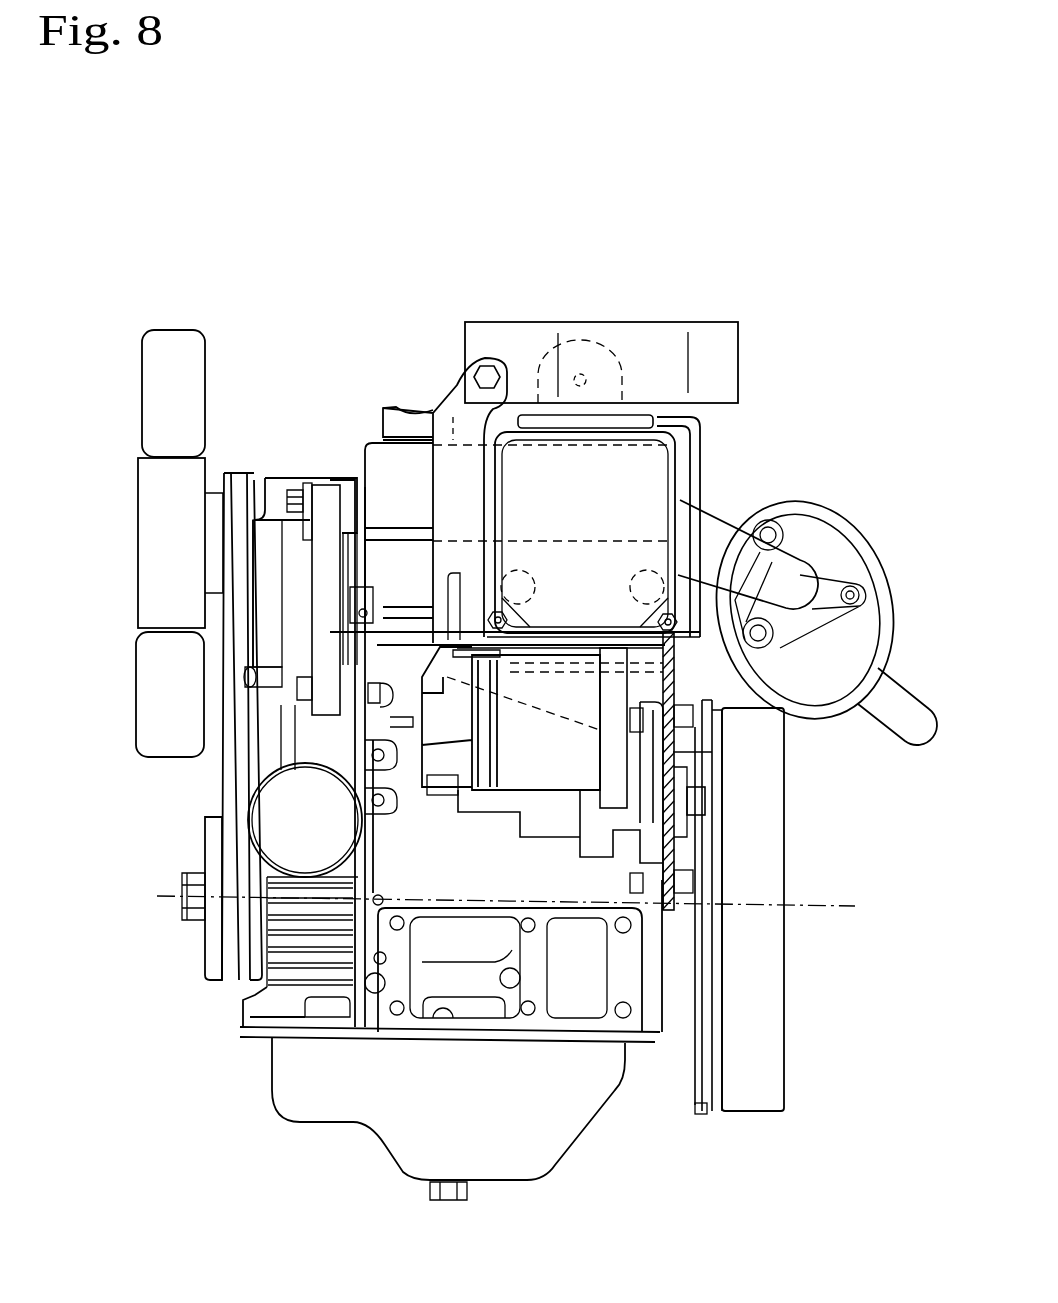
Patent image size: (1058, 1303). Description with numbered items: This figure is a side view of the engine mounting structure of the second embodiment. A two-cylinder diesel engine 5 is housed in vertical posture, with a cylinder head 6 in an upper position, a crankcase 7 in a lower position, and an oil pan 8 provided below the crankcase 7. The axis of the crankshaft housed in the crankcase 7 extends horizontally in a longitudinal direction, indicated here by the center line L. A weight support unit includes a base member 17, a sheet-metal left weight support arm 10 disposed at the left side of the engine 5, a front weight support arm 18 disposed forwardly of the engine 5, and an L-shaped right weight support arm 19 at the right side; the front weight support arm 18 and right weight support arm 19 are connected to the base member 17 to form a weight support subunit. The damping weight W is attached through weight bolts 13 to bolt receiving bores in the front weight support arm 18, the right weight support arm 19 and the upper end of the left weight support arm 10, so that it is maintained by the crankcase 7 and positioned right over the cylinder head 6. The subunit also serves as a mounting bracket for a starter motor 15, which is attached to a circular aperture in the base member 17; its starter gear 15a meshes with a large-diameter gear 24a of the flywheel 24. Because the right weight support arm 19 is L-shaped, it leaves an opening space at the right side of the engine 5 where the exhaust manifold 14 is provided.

The two-cylinder diesel engine 5 is at (292, 477).
The cylinder head 6 is at (405, 588).
The crankcase 7 is at (400, 775).
The oil pan 8 is at (550, 1152).
The left weight support arm 10 is at (594, 410).
The weight bolt 13 is at (478, 382).
The exhaust manifold 14 is at (680, 497).
The starter motor 15 is at (452, 760).
The starter gear 15a is at (707, 802).
The base member 17 is at (722, 752).
The front weight support arm 18 is at (700, 440).
The right weight support arm 19 is at (460, 397).
The flywheel 24 is at (765, 1062).
The large-diameter gear 24a is at (700, 1118).
The damping weight W is at (712, 332).
The crankshaft axis L is at (855, 912).